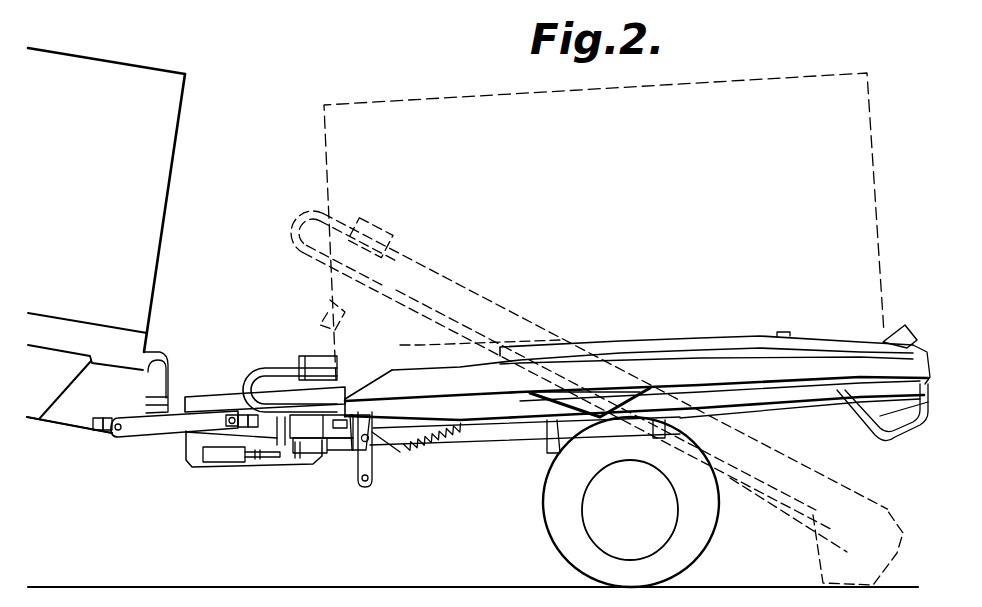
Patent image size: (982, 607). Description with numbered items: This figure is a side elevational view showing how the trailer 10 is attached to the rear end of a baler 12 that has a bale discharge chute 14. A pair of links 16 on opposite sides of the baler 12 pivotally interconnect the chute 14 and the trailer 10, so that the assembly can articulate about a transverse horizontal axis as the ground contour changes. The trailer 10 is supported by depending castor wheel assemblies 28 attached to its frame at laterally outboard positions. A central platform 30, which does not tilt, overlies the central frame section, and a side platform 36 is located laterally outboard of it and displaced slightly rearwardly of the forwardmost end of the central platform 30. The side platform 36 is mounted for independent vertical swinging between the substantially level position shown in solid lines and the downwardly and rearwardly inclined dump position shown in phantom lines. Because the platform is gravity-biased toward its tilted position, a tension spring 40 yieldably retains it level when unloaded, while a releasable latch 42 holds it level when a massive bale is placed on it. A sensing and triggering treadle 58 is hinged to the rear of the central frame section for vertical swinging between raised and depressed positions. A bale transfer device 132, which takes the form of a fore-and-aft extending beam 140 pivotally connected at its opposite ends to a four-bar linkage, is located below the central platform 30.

The trailer 10 is at (560, 286).
The baler 12 is at (80, 440).
The bale discharge chute 14 is at (163, 164).
The links 16 is at (175, 433).
The castor wheel assemblies 28 is at (538, 502).
The central platform 30 is at (216, 384).
The left side platform 36 is at (450, 283).
The tension spring 40 is at (430, 440).
The releasable latch 42 is at (352, 458).
The sensing and triggering treadle 58 is at (900, 325).
The bale transfer device 132 is at (650, 332).
The beam 140 is at (688, 346).